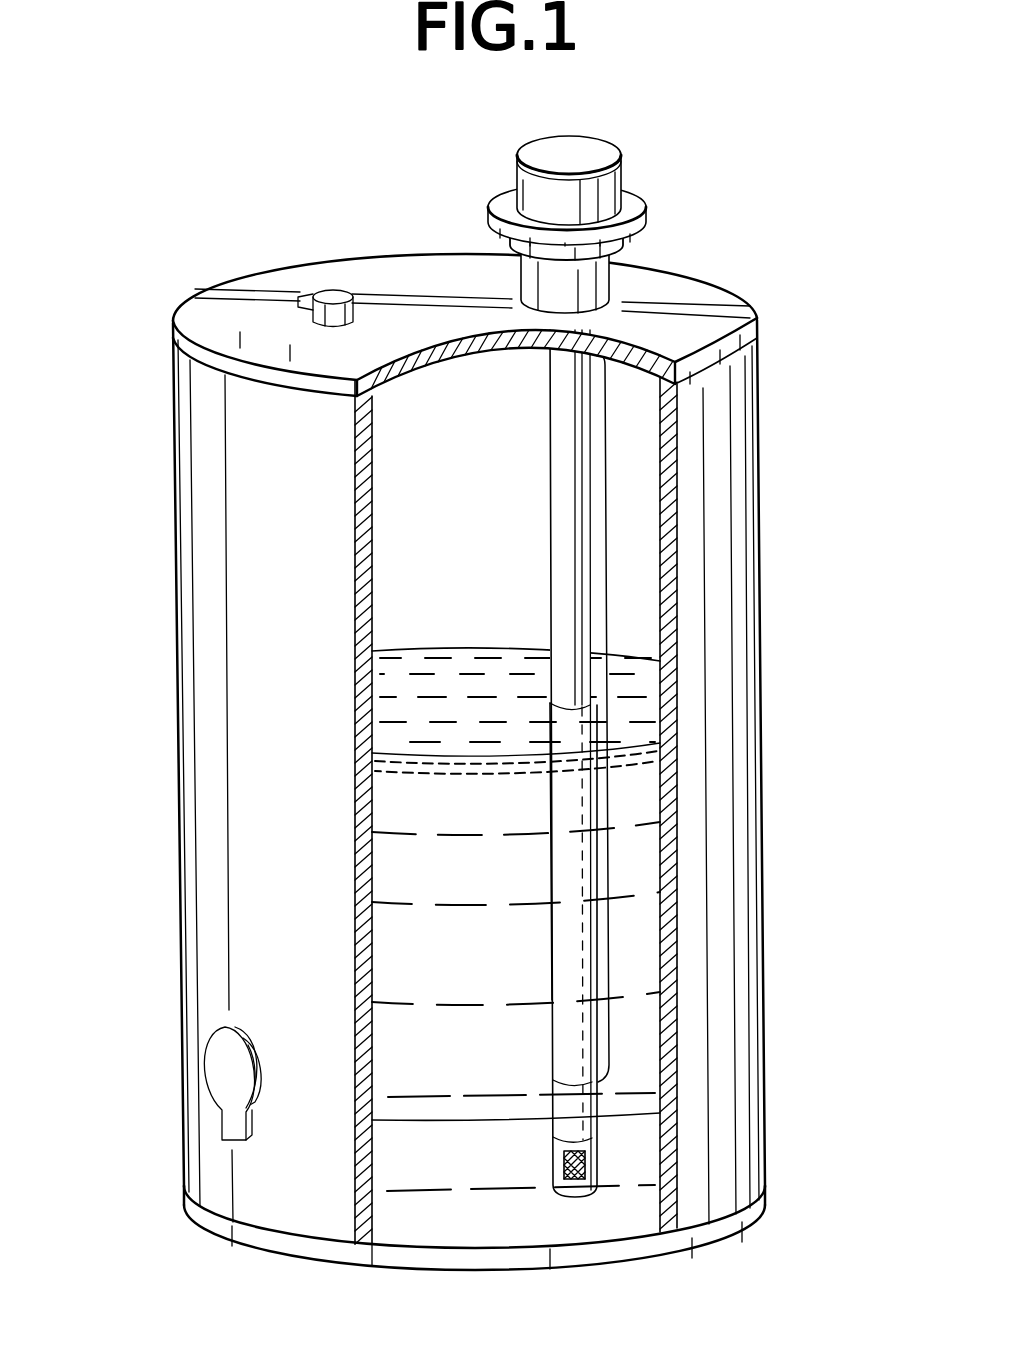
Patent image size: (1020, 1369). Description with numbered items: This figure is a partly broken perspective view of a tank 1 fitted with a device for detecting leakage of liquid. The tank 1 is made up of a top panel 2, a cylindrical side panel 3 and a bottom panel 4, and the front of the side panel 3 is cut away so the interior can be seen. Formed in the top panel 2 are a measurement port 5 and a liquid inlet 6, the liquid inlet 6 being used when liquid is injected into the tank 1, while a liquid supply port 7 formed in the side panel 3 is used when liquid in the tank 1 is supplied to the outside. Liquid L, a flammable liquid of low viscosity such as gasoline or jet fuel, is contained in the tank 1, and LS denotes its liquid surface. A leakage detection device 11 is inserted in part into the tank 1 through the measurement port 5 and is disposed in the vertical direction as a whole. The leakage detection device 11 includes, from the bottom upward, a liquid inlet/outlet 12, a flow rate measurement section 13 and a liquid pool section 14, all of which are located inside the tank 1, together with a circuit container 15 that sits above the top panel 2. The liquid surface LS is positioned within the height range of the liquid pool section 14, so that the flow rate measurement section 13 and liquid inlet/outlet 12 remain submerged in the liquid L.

The tank 1 is at (253, 256).
The top panel 2 is at (193, 305).
The side panel 3 is at (208, 694).
The bottom panel 4 is at (425, 1262).
The measurement port 5 is at (533, 287).
The liquid inlet 6 is at (333, 290).
The liquid supply port 7 is at (220, 1078).
The leakage detection device 11 is at (523, 479).
The liquid inlet/outlet 12 is at (605, 1140).
The flow rate measurement section 13 is at (605, 1082).
The liquid pool section 14 is at (606, 700).
The circuit container 15 is at (577, 155).
The liquid surface LS is at (486, 652).
The liquid L is at (484, 872).